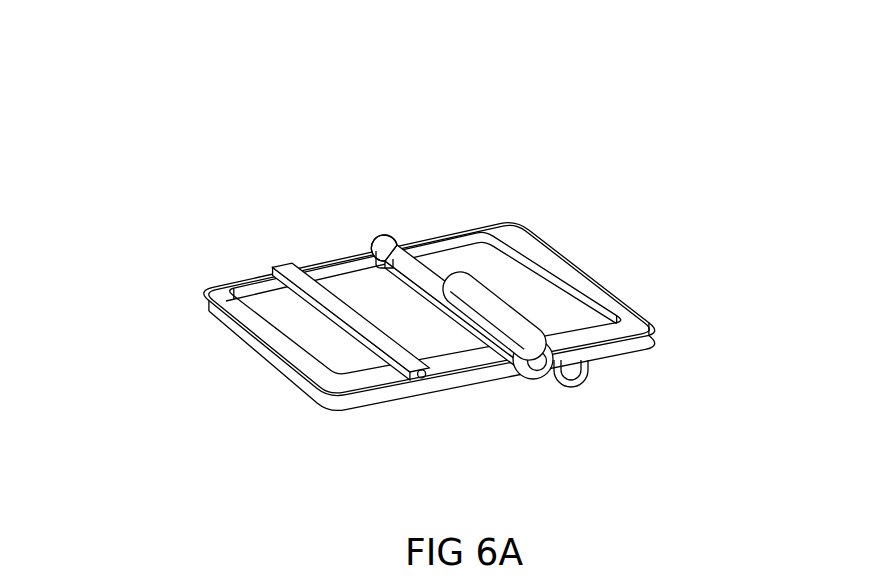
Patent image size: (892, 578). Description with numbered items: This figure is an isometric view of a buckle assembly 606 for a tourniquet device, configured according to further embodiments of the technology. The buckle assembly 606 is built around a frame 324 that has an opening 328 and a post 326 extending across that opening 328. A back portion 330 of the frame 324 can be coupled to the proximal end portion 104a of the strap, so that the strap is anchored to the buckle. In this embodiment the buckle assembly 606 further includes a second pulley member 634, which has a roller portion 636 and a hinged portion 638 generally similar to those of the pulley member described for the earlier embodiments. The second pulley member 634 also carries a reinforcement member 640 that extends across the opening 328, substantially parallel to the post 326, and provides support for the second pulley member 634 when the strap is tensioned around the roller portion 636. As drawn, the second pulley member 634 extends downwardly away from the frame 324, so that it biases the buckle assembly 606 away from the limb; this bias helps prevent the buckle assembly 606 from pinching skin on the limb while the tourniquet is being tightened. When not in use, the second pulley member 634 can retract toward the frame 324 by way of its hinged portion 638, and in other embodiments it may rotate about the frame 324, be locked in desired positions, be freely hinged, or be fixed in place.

The buckle assembly 606 is at (427, 278).
The proximal end portion of the strap 104a is at (548, 228).
The frame 324 is at (366, 398).
The post 326 is at (446, 393).
The opening 328 is at (320, 350).
The back portion 330 is at (648, 337).
The second pulley member 634 is at (461, 255).
The roller portion 636 is at (491, 272).
The hinged portion 638 is at (397, 253).
The reinforcement member 640 is at (366, 257).